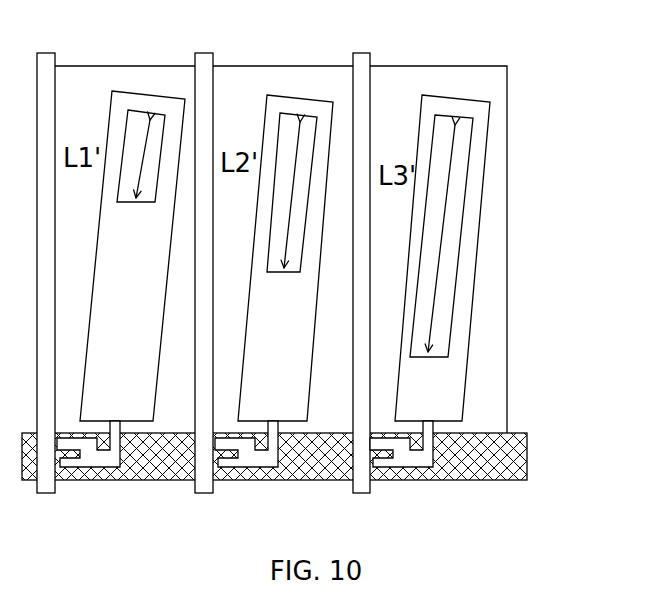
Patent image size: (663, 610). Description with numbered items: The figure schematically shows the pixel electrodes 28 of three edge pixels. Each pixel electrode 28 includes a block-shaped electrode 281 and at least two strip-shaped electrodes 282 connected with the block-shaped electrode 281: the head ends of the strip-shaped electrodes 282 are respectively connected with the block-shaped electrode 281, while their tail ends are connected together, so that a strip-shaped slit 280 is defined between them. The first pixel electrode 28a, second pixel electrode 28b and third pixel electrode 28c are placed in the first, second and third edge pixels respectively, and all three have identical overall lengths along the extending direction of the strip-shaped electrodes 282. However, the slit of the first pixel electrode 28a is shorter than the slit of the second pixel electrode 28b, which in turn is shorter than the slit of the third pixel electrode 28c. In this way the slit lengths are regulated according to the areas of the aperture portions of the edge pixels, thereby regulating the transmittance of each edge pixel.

The pixel electrode 28 is at (502, 235).
The first pixel electrode 28a is at (135, 108).
The second pixel electrode 28b is at (293, 97).
The third pixel electrode 28c is at (476, 235).
The strip-shaped slit 280 is at (452, 227).
The block-shaped electrode 281 is at (433, 377).
The strip-shaped electrode 282 is at (460, 280).